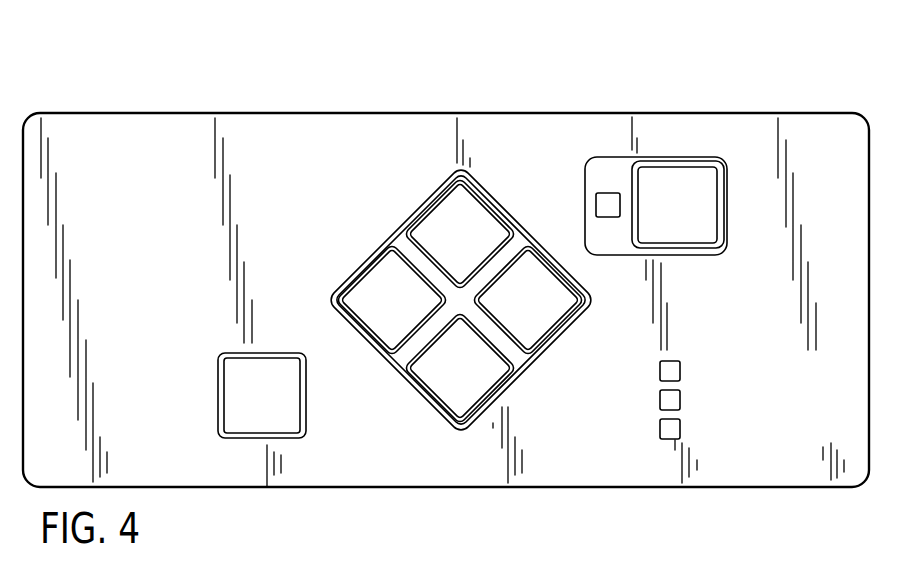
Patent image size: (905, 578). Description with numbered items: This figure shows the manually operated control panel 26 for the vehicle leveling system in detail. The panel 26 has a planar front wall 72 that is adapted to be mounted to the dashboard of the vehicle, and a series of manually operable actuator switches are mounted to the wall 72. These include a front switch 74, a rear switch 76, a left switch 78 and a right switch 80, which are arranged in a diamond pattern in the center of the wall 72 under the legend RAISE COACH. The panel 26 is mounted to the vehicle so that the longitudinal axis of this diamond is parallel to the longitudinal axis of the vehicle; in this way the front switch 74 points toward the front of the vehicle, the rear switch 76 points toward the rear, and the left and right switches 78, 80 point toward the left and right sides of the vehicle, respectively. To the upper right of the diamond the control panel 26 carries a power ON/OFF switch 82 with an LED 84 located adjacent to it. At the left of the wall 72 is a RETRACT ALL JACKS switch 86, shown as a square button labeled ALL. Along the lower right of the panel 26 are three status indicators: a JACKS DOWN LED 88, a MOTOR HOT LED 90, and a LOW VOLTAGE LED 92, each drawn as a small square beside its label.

The control panel 26 is at (379, 78).
The planar front wall 72 is at (545, 478).
The front switch 74 is at (424, 207).
The rear switch 76 is at (441, 414).
The left switch 78 is at (360, 266).
The right switch 80 is at (561, 334).
The power ON/OFF switch 82 is at (676, 167).
The LED 84 is at (607, 193).
The RETRACT ALL JACKS switch 86 is at (262, 438).
The JACKS DOWN LED 88 is at (667, 362).
The MOTOR HOT LED 90 is at (659, 399).
The LOW VOLTAGE LED 92 is at (672, 440).